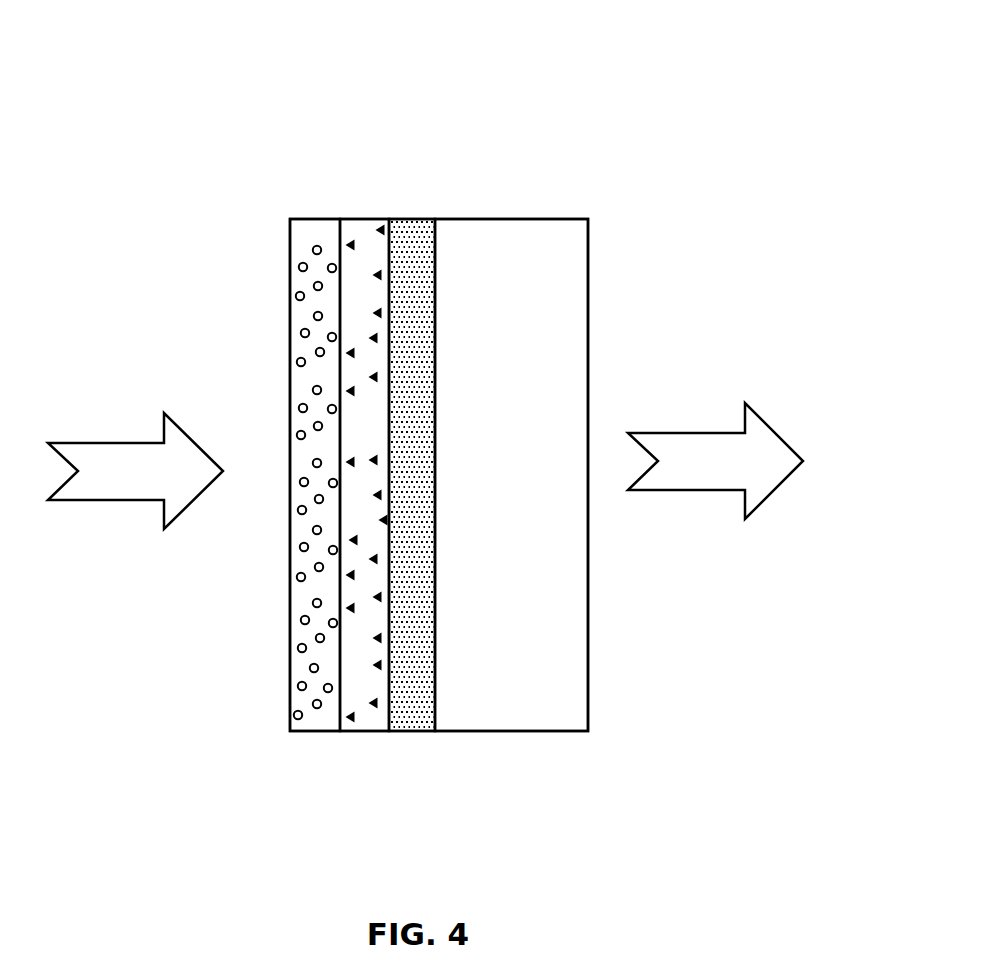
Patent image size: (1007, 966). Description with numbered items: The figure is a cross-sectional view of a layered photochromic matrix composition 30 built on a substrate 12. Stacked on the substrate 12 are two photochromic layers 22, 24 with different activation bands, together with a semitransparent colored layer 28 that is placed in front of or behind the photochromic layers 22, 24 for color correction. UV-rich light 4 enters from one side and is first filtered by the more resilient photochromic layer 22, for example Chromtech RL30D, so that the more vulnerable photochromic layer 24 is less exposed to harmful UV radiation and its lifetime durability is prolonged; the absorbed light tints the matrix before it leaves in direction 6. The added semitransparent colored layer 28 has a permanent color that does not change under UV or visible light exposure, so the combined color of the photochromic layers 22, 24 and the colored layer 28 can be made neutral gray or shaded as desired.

The layered photochromic matrix composition 30 is at (557, 94).
The photochromic layer 22 is at (313, 722).
The photochromic layer 24 is at (365, 722).
The semitransparent colored layer 28 is at (416, 722).
The substrate 12 is at (510, 722).
The UV-rich light 4 is at (135, 471).
The direction 6 is at (715, 461).